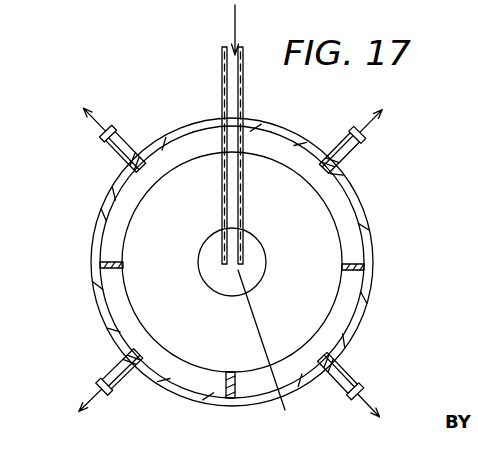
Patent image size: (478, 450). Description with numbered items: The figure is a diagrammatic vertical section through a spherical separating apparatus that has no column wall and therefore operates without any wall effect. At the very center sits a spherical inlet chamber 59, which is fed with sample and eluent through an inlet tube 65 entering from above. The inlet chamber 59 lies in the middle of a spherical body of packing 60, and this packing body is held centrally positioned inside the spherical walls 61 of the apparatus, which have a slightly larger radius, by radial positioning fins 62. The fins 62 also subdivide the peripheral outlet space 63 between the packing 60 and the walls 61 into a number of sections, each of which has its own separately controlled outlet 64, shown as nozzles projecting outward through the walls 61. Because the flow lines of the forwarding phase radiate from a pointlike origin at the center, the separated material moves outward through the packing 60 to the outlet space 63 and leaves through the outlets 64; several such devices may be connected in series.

The spherical inlet chamber 59 is at (275, 358).
The spherical body of packing 60 is at (314, 236).
The spherical walls 61 is at (357, 320).
The radial positioning fins 62 is at (100, 277).
The peripheral outlet space 63 is at (282, 160).
The separately controlled outlet 64 is at (125, 143).
The inlet tube 65 is at (243, 102).